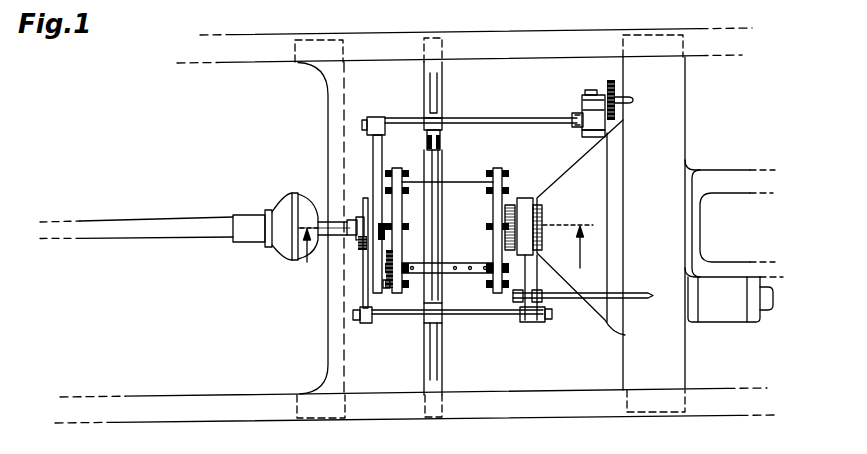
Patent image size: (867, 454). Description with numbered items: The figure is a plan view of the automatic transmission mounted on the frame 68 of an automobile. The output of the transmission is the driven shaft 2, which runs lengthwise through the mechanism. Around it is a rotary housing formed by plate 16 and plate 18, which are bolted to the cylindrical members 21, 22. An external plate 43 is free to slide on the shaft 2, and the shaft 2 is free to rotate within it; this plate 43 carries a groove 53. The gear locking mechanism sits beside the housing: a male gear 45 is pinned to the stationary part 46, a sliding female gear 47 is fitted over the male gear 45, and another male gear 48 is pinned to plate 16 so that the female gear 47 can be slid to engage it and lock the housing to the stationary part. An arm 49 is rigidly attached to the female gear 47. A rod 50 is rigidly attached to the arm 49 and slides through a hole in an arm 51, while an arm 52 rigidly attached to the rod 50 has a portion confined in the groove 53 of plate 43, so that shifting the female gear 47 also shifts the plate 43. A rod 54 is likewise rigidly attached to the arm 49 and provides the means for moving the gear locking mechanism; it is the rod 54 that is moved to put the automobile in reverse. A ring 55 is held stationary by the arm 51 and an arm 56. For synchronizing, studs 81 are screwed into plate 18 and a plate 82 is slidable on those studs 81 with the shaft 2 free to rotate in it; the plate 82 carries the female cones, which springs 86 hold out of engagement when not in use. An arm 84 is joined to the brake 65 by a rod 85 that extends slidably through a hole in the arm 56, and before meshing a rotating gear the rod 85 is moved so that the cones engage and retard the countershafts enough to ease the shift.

The driven shaft 2 is at (440, 258).
The plate 16 is at (497, 170).
The plate 18 is at (395, 172).
The cylindrical member 21 is at (458, 188).
The cylindrical member 22 is at (408, 184).
The external plate 43 is at (369, 276).
The male gear 45 is at (540, 190).
The stationary part 46 is at (560, 197).
The sliding female gear 47 is at (523, 203).
The male gear 48 is at (508, 203).
The arm 49 is at (530, 320).
The rod 50 is at (467, 323).
The arm 51 is at (427, 337).
The arm 52 is at (358, 278).
The groove 53 is at (362, 215).
The rod 54 is at (577, 298).
The ring 55 is at (437, 170).
The arm 56 is at (432, 93).
The brake 65 is at (615, 92).
The frame 68 is at (250, 63).
The studs 81 is at (370, 215).
The plate 82 is at (387, 284).
The arm 84 is at (367, 143).
The rod 85 is at (527, 118).
The springs 86 is at (389, 242).